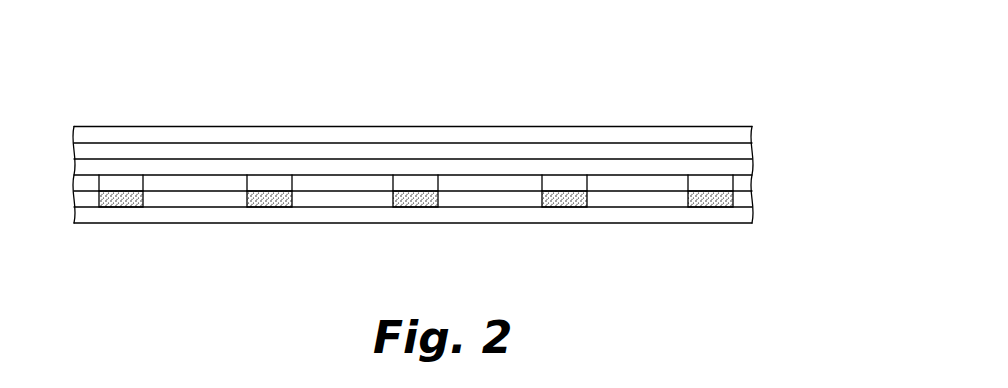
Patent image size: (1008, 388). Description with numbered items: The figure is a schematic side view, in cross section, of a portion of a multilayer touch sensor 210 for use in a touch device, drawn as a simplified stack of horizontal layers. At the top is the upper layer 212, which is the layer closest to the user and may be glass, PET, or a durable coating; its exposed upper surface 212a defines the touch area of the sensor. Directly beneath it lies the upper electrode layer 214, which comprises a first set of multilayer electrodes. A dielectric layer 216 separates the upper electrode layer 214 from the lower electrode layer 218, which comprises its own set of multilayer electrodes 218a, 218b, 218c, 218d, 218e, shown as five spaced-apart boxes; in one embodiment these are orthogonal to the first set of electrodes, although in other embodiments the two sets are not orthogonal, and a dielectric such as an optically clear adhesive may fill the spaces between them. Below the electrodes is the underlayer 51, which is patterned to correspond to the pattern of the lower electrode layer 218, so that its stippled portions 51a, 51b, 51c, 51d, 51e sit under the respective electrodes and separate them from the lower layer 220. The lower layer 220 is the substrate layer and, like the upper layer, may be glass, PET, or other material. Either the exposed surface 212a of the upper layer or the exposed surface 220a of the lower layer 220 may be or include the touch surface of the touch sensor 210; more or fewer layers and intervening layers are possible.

The multilayer touch sensor 210 is at (770, 55).
The upper layer 212 is at (627, 133).
The upper surface of upper layer 212a is at (479, 123).
The upper electrode layer 214 is at (745, 150).
The dielectric layer 216 is at (743, 168).
The lower electrode layer 218 is at (743, 182).
The multilayer electrode 218a is at (125, 183).
The multilayer electrode 218b is at (270, 183).
The multilayer electrode 218c is at (417, 183).
The multilayer electrode 218d is at (561, 183).
The multilayer electrode 218e is at (710, 183).
The underlayer 51 is at (745, 198).
The underlayer portion 51a is at (118, 195).
The underlayer portion 51b is at (270, 195).
The underlayer portion 51c is at (415, 195).
The underlayer portion 51d is at (560, 195).
The underlayer portion 51e is at (708, 195).
The lower layer 220 is at (747, 216).
The exposed surface of lower layer 220a is at (192, 233).